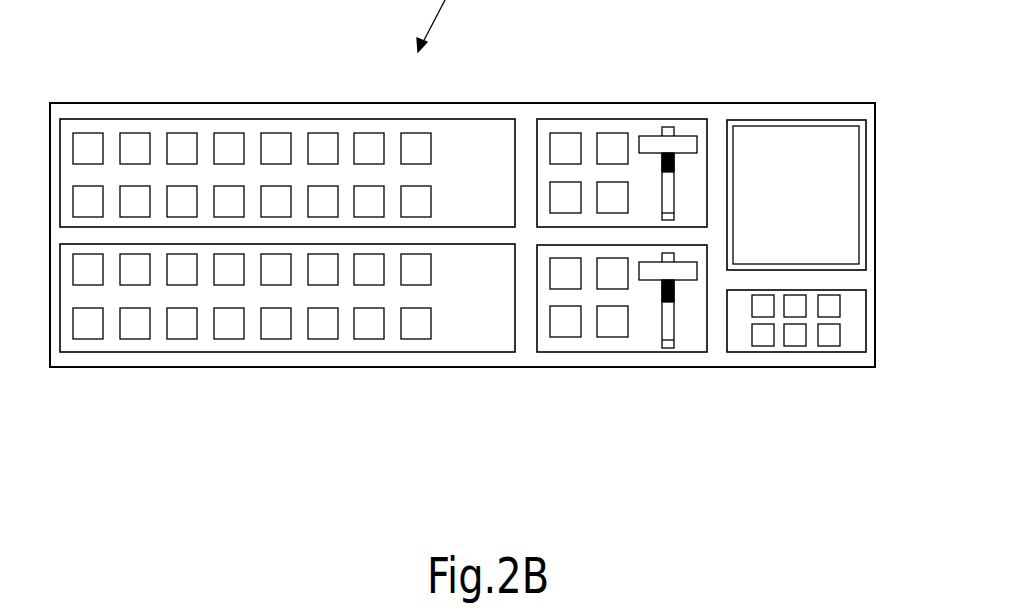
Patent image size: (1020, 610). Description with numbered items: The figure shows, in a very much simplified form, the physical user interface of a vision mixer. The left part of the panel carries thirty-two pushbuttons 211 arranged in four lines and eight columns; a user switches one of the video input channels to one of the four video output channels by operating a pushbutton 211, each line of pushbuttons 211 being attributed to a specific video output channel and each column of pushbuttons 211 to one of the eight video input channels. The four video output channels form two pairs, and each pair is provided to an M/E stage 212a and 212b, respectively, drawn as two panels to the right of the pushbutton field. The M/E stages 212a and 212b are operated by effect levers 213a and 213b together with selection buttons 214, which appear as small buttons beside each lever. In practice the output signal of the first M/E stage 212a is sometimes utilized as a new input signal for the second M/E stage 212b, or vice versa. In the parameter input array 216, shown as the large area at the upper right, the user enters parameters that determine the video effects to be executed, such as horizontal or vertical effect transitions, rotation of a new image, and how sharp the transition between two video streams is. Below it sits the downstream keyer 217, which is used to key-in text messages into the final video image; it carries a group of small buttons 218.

The pushbutton 211 is at (92, 147).
The M/E stage 212a is at (610, 118).
The M/E stage 212b is at (612, 352).
The effect lever 213a is at (674, 127).
The effect lever 213b is at (673, 344).
The selection buttons 214 is at (566, 139).
The parameter input array 216 is at (795, 119).
The downstream keyer 217 is at (847, 352).
The buttons 218 is at (830, 337).